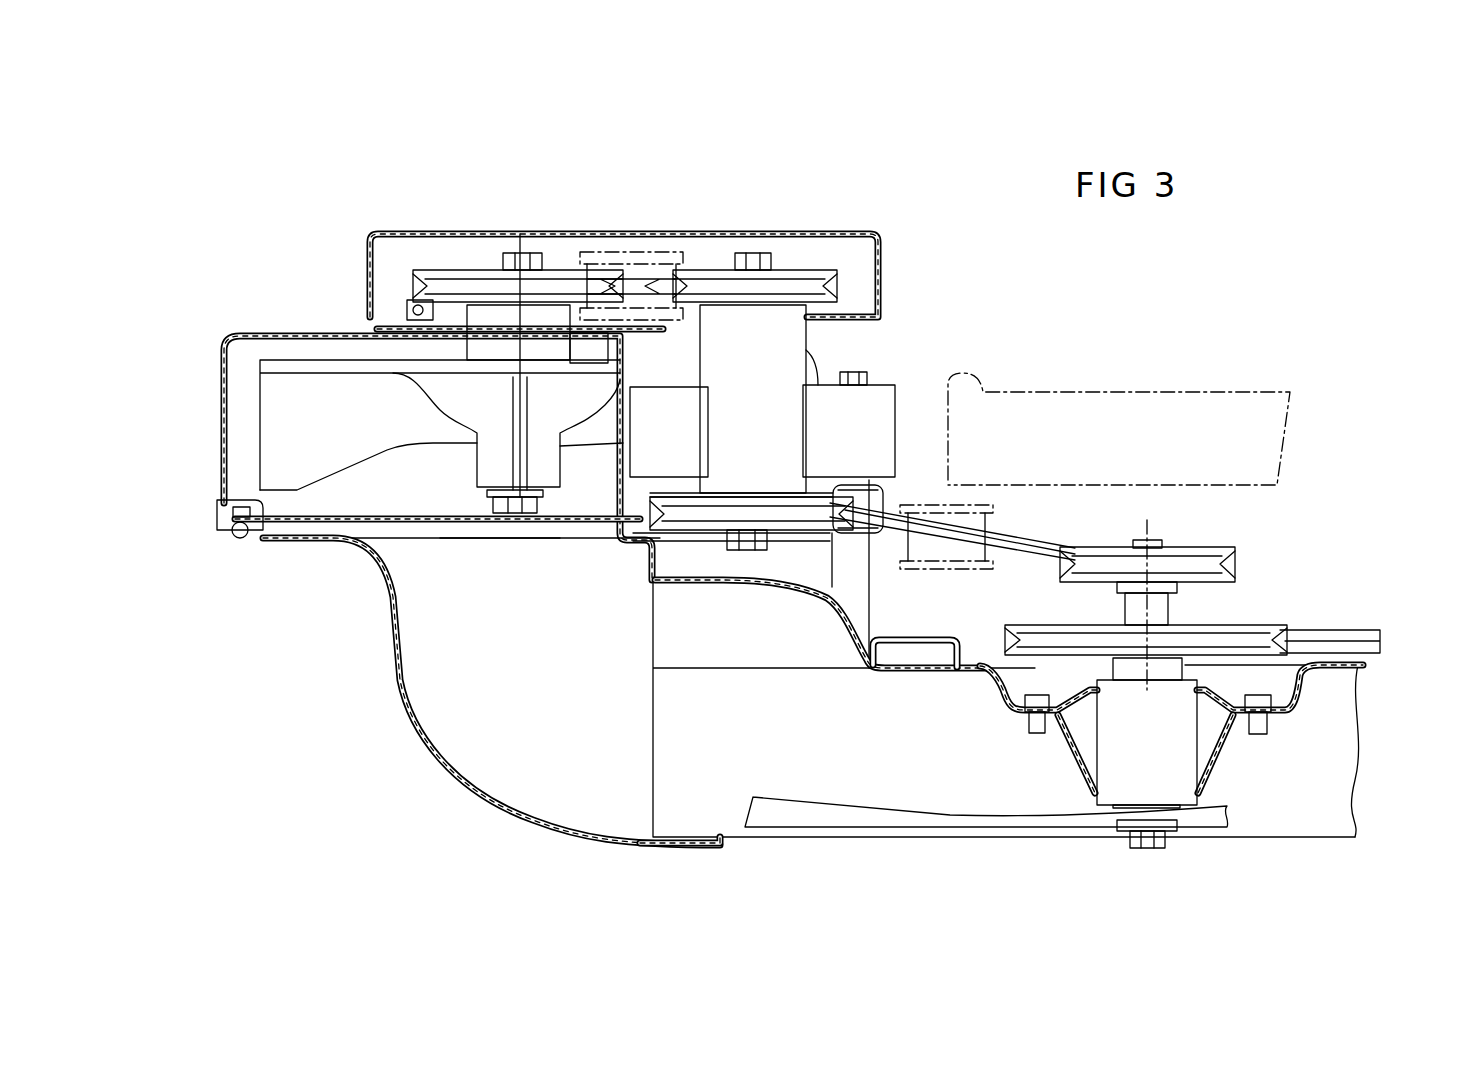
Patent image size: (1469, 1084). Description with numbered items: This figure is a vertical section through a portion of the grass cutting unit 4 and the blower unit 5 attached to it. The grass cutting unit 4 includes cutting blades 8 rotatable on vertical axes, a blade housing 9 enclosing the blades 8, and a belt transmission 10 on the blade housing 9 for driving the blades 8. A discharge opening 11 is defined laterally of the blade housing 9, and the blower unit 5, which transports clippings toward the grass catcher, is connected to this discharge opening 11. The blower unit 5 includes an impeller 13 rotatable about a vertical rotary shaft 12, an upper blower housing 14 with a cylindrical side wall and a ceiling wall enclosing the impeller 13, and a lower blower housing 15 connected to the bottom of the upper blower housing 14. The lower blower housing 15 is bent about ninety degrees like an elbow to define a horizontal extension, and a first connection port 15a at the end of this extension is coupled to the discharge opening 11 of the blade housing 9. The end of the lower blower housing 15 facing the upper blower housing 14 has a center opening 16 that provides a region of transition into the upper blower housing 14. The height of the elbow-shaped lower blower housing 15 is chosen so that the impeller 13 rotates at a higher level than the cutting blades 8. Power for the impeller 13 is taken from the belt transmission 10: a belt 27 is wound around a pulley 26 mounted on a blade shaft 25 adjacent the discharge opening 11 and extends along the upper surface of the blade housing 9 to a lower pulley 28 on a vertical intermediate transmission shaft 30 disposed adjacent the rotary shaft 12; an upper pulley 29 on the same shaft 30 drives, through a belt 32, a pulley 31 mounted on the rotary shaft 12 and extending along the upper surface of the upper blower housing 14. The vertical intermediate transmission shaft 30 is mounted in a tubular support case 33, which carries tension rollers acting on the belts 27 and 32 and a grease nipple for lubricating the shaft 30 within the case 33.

The grass cutting unit 4 is at (1375, 512).
The blower unit 5 is at (271, 214).
The cutting blades 8 is at (943, 817).
The blade housing 9 is at (1343, 660).
The belt transmission 10 is at (1396, 596).
The discharge opening 11 is at (660, 766).
The rotary shaft 12 is at (520, 234).
The impeller 13 is at (380, 443).
The upper blower housing 14 is at (222, 437).
The lower blower housing 15 is at (397, 680).
The first connection port 15a is at (698, 857).
The center opening 16 is at (507, 560).
The blade shaft 25 is at (1173, 603).
The pulley 26 is at (1197, 545).
The belt 27 is at (1022, 557).
The lower pulley 28 is at (835, 503).
The upper pulley 29 is at (818, 272).
The vertical intermediate transmission shaft 30 is at (752, 252).
The pulley 31 is at (567, 242).
The belt 32 is at (645, 262).
The tubular support case 33 is at (790, 335).